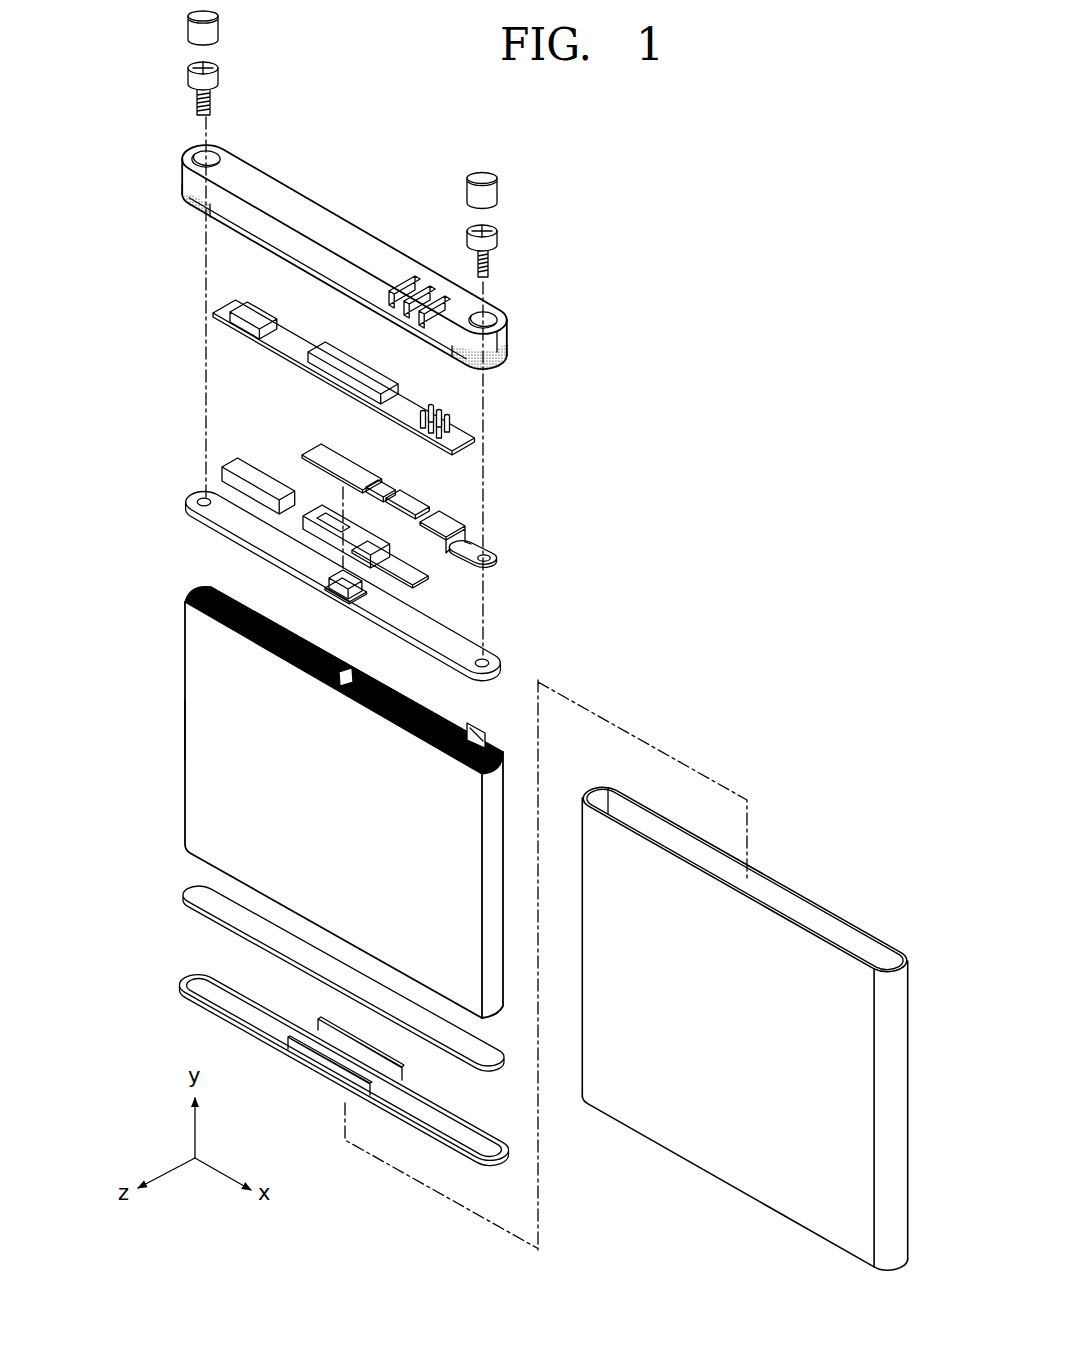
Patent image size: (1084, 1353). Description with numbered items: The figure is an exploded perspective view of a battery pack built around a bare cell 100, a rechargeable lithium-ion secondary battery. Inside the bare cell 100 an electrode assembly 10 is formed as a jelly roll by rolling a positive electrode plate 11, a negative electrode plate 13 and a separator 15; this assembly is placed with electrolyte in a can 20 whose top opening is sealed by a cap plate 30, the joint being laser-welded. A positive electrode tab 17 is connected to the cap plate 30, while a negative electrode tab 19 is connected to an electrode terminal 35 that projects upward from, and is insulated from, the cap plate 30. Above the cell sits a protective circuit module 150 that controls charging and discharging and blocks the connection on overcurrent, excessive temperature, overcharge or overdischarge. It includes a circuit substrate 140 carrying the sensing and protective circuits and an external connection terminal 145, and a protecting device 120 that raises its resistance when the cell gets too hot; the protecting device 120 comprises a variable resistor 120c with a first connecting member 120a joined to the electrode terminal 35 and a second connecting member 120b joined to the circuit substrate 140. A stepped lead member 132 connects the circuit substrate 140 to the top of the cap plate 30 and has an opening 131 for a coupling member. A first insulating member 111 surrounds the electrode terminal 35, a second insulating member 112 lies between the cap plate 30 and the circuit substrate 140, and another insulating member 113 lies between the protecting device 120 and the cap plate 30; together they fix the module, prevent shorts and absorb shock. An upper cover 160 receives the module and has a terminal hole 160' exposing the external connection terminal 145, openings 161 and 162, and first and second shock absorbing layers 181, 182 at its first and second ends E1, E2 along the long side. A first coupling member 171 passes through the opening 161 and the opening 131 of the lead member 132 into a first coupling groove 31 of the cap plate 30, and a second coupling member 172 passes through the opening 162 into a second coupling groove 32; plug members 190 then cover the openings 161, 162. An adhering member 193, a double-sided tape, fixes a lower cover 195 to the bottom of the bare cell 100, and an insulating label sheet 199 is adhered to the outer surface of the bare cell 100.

The bare cell 100 is at (305, 784).
The electrode assembly 10 is at (305, 784).
The positive electrode plate 11 is at (186, 605).
The negative electrode plate 13 is at (190, 597).
The separator 15 is at (186, 600).
The positive electrode tab 17 is at (460, 772).
The negative electrode tab 19 is at (338, 688).
The can 20 is at (195, 712).
The cap plate 30 is at (336, 579).
The first coupling groove 31 is at (489, 664).
The second coupling groove 32 is at (199, 502).
The electrode terminal 35 is at (340, 588).
The first insulating member 111 is at (386, 546).
The second insulating member 112 is at (230, 457).
The insulating member 113 is at (413, 581).
The protecting device 120 is at (400, 461).
The first connecting member 120a is at (318, 448).
The second connecting member 120b is at (415, 498).
The variable resistor 120c is at (380, 486).
The opening 131 is at (489, 556).
The lead member 132 is at (456, 522).
The circuit substrate 140 is at (472, 447).
The external connection terminal 145 is at (458, 420).
The protective circuit module 150 is at (410, 386).
The upper cover 160 is at (351, 266).
The terminal hole 160' is at (419, 261).
The opening of upper cover 161 is at (499, 314).
The opening of upper cover 162 is at (196, 157).
The first coupling member 171 is at (498, 238).
The second coupling member 172 is at (188, 76).
The first shock absorbing layer 181 is at (508, 360).
The second shock absorbing layer 182 is at (186, 203).
The plug member 190 is at (188, 27).
The adhering member 193 is at (197, 895).
The lower cover 195 is at (197, 984).
The insulating label sheet 199 is at (670, 1146).
The first end E1 is at (509, 371).
The second end E2 is at (193, 224).